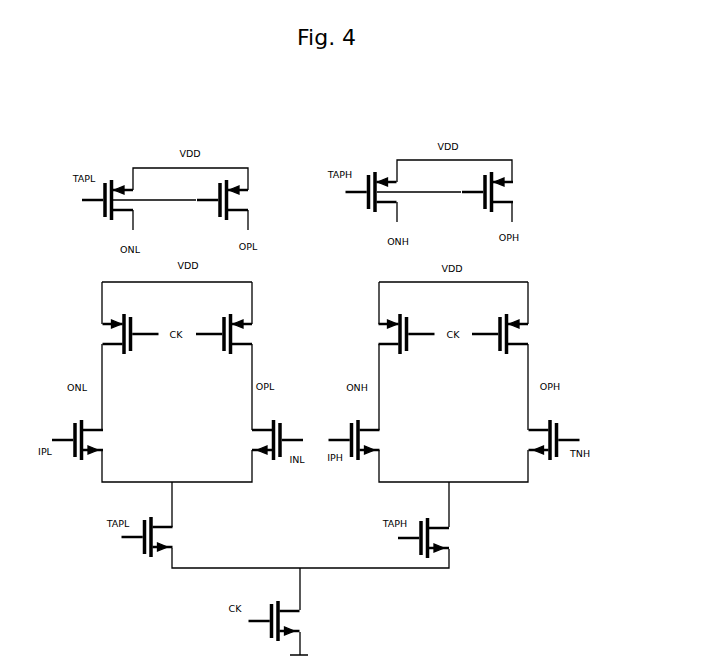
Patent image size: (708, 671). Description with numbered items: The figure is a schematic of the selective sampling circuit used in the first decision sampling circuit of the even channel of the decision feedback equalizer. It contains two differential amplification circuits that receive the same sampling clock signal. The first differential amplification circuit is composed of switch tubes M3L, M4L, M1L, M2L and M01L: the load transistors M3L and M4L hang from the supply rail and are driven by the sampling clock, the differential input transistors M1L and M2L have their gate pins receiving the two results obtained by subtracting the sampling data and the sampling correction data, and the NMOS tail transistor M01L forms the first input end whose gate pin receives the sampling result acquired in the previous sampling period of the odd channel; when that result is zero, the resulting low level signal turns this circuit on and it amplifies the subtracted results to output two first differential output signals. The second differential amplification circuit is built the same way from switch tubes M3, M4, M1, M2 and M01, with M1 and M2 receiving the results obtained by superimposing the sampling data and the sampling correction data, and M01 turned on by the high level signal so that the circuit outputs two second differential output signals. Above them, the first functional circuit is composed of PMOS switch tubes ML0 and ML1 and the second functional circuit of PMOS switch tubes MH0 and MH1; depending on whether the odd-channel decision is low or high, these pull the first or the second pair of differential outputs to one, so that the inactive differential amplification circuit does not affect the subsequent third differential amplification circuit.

The switch tube ML0 is at (107, 203).
The switch tube ML1 is at (222, 203).
The switch tube MH0 is at (370, 199).
The switch tube MH1 is at (483, 199).
The switch tube M3L is at (114, 334).
The switch tube M4L is at (239, 334).
The switch tube M1L is at (91, 440).
The switch tube M2L is at (262, 440).
The switch tube M3 is at (393, 334).
The switch tube M4 is at (512, 334).
The switch tube M1 is at (366, 440).
The switch tube M2 is at (541, 440).
The switch tube M01L is at (169, 537).
The switch tube M01 is at (442, 538).